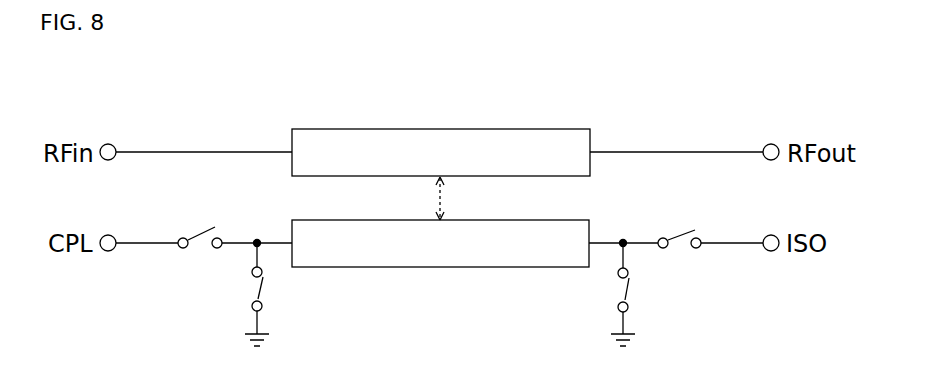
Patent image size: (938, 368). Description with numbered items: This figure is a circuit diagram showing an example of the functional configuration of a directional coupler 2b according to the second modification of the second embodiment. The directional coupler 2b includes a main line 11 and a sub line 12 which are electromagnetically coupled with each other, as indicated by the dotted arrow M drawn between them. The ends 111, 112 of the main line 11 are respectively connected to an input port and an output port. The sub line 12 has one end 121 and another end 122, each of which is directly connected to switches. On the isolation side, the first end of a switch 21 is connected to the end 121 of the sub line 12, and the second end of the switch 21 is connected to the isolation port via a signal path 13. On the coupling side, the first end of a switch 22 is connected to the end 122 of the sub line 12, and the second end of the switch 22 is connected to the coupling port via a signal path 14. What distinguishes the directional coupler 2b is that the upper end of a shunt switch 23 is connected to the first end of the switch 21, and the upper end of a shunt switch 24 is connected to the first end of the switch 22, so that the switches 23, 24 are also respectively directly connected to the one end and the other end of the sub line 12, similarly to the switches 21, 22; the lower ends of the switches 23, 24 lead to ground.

The directional coupler 2b is at (784, 83).
The main line 11 is at (395, 129).
The end of main line 111 is at (290, 151).
The end of main line 112 is at (591, 151).
The sub line 12 is at (395, 220).
The end of sub line 121 is at (591, 243).
The end of sub line 122 is at (290, 243).
The signal path 13 is at (735, 243).
The signal path 14 is at (147, 243).
The switch 21 is at (678, 236).
The switch 22 is at (200, 232).
The switch 23 is at (628, 285).
The switch 24 is at (265, 283).
The dotted arrow M is at (445, 205).